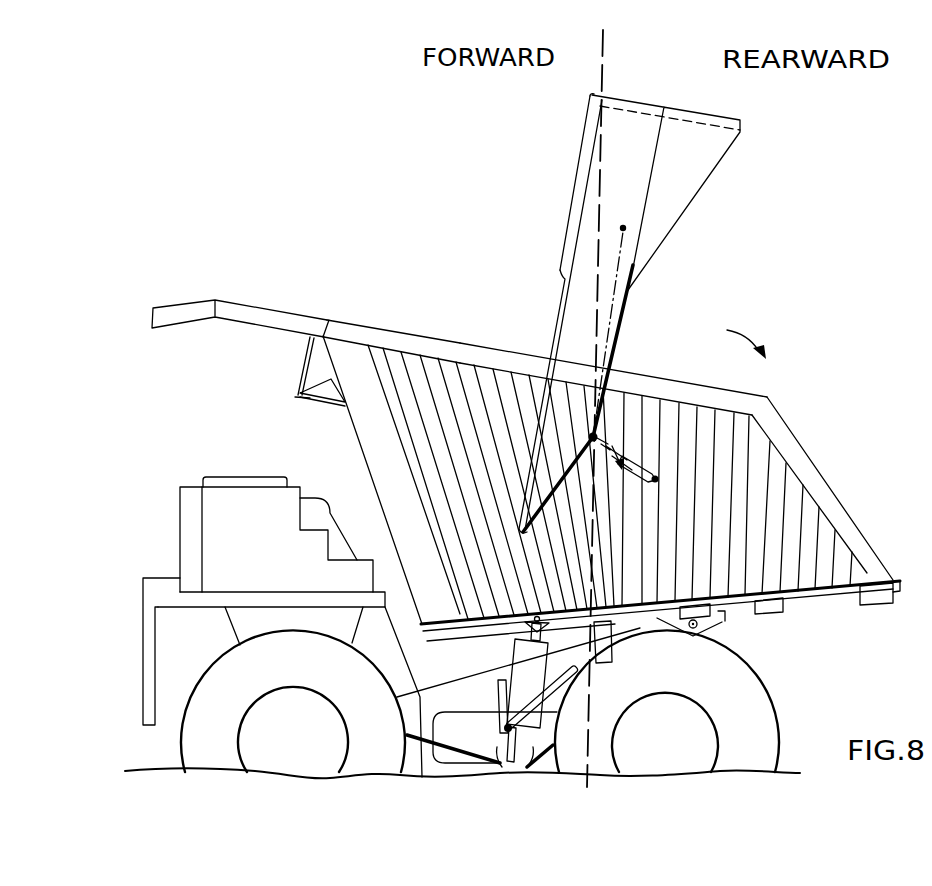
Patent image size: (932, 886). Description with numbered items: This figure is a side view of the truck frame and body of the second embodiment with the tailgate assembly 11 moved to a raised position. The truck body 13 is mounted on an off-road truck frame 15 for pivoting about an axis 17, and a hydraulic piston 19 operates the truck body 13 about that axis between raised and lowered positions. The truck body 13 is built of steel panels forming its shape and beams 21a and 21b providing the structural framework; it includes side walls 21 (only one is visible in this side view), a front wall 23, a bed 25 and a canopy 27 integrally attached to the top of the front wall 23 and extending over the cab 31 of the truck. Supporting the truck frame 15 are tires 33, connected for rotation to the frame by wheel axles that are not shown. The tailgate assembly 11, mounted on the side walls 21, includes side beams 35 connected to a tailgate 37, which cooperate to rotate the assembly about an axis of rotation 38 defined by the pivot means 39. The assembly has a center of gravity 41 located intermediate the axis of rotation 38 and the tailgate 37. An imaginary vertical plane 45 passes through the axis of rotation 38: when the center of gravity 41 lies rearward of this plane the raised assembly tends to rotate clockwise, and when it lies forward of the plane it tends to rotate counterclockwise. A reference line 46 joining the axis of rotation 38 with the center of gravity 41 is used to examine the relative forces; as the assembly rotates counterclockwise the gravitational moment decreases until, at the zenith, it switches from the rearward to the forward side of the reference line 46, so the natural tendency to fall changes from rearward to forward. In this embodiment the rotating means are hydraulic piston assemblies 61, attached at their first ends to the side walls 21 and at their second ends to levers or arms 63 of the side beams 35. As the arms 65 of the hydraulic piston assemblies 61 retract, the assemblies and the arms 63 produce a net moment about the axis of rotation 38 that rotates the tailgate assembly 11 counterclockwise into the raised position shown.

The tailgate assembly 11 is at (575, 152).
The truck body 13 is at (352, 312).
The off-road truck frame 15 is at (462, 695).
The axis 17 is at (702, 623).
The hydraulic piston 19 is at (532, 661).
The side walls 21 is at (486, 458).
The beams 21a is at (653, 388).
The beams 21b is at (400, 518).
The front wall 23 is at (357, 446).
The bed 25 is at (800, 577).
The canopy 27 is at (273, 326).
The cab 31 is at (190, 538).
The tires 33 is at (225, 667).
The side beams 35 is at (574, 296).
The tailgate 37 is at (636, 108).
The axis of rotation 38 is at (590, 436).
The pivot means 39 is at (585, 442).
The center of gravity 41 is at (626, 226).
The imaginary vertical plane 45 is at (600, 190).
The reference line 46 is at (617, 299).
The hydraulic piston assemblies 61 is at (638, 486).
The levers (arms) 63 is at (603, 440).
The arms 65 is at (620, 450).